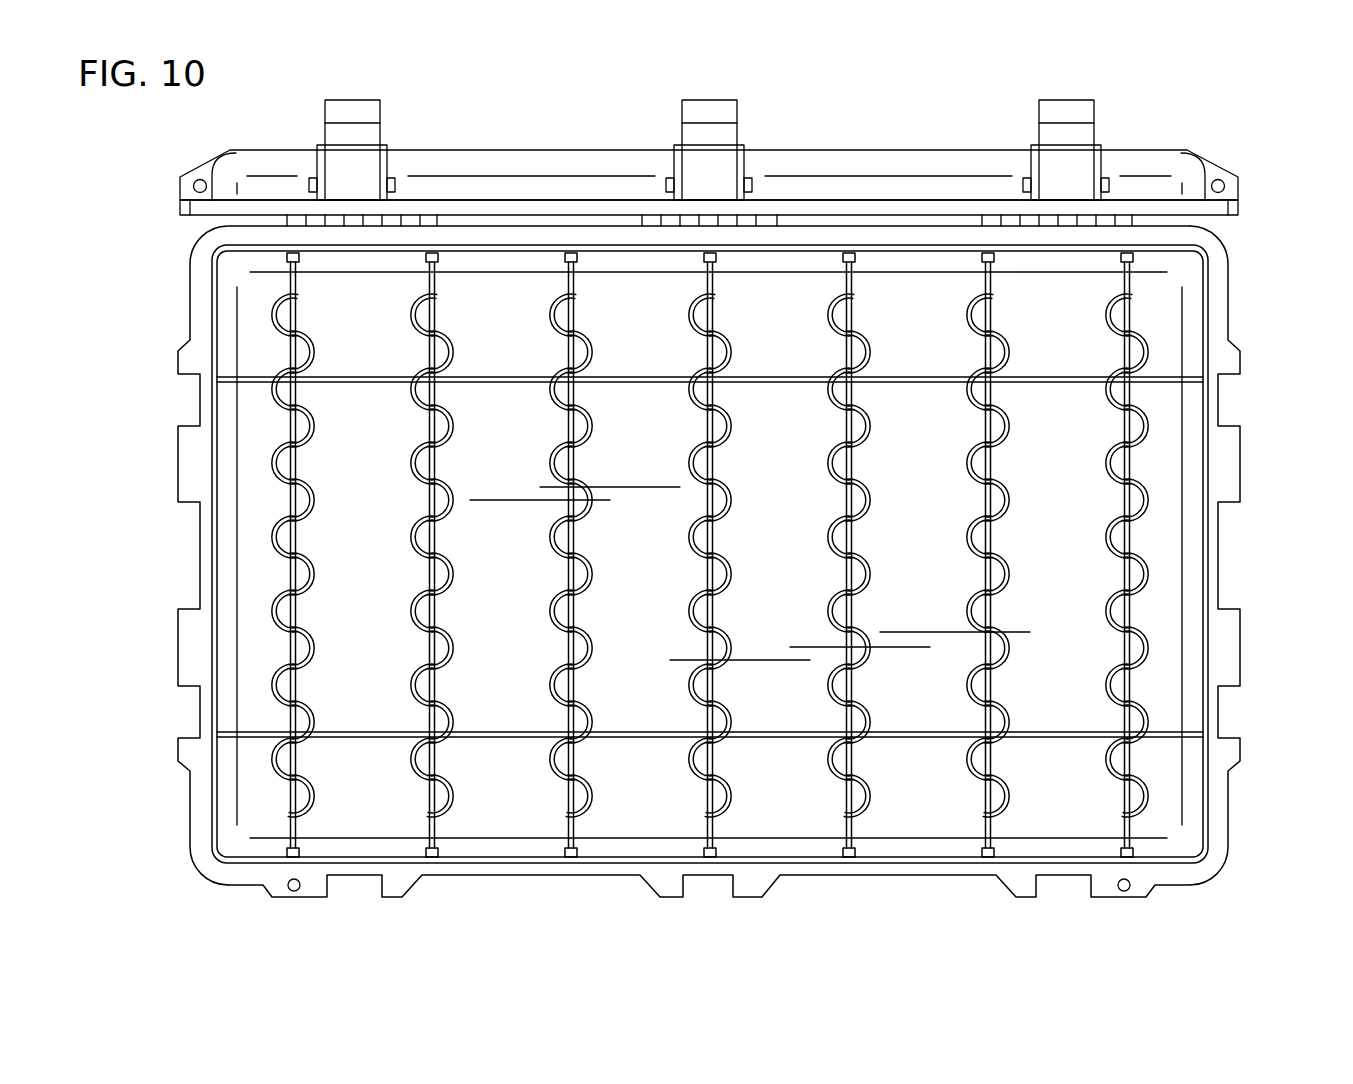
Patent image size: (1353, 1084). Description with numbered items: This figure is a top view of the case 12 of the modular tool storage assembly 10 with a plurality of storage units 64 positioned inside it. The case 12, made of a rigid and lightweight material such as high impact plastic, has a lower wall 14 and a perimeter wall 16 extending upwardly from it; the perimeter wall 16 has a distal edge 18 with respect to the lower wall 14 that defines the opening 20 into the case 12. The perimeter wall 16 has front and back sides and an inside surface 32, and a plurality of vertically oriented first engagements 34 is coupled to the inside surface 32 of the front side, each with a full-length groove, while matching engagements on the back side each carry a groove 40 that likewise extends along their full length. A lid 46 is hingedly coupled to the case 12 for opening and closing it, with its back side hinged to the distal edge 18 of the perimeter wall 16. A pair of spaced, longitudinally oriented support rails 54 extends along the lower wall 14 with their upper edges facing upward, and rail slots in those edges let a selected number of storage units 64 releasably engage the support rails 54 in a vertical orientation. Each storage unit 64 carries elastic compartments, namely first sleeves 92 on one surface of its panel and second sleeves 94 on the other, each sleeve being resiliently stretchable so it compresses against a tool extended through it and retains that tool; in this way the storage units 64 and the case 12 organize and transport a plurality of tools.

The modular tool storage assembly 10 is at (1262, 123).
The case 12 is at (1230, 278).
The lower wall 14 is at (925, 813).
The perimeter wall 16 is at (857, 873).
The distal edge 18 is at (1219, 762).
The opening 20 is at (1065, 800).
The inside surface 32 is at (492, 858).
The first engagements 34 is at (430, 853).
The groove 40 is at (985, 256).
The lid 46 is at (548, 150).
The support rails 54 is at (234, 375).
The storage units 64 is at (822, 304).
The first sleeves 92 is at (272, 568).
The second sleeves 94 is at (312, 485).